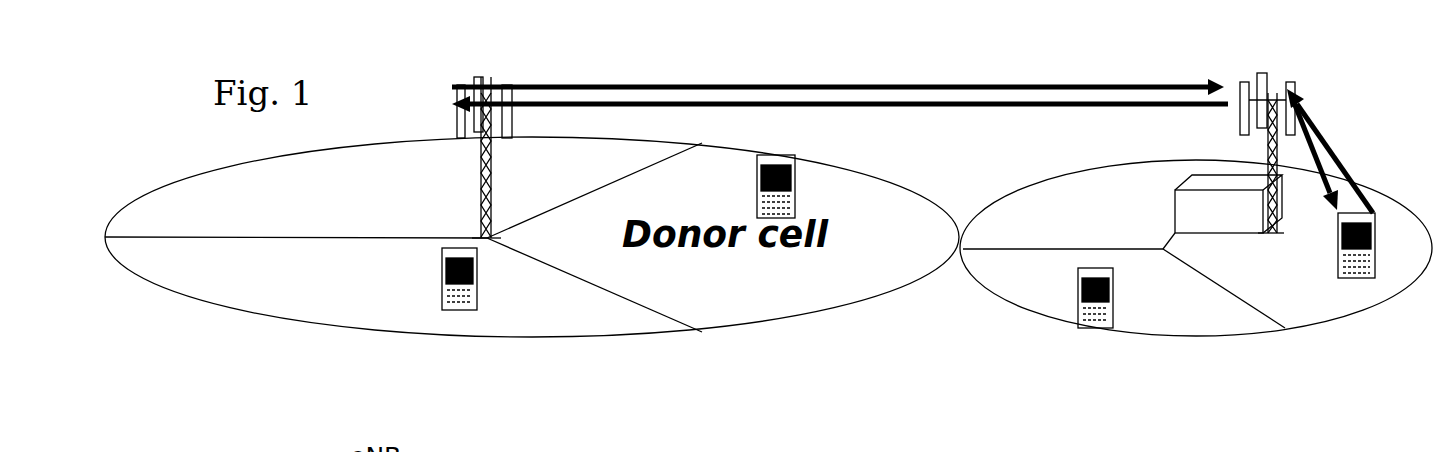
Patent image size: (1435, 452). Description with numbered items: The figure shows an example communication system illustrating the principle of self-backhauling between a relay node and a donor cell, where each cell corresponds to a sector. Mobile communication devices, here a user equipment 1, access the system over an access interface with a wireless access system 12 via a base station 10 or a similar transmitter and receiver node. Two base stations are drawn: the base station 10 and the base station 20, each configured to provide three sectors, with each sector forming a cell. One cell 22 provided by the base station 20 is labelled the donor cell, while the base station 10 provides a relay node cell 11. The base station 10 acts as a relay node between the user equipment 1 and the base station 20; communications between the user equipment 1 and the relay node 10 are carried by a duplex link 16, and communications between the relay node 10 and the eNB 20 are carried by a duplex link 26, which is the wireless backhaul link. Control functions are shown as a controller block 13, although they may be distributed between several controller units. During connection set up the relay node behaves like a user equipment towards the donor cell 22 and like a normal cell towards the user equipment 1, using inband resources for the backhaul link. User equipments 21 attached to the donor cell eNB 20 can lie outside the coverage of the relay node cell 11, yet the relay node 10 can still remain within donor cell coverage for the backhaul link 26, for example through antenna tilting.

The user equipment 1 is at (1340, 255).
The base station acting as relay node 10 is at (1266, 75).
The relay node cell 11 is at (1284, 282).
The wireless access system 12 is at (1345, 93).
The controller 13 is at (1207, 212).
The duplex link 16 is at (1350, 170).
The base station 20 is at (478, 192).
The user equipments 21 is at (757, 183).
The donor cell 22 is at (590, 267).
The duplex link 26 is at (1103, 98).